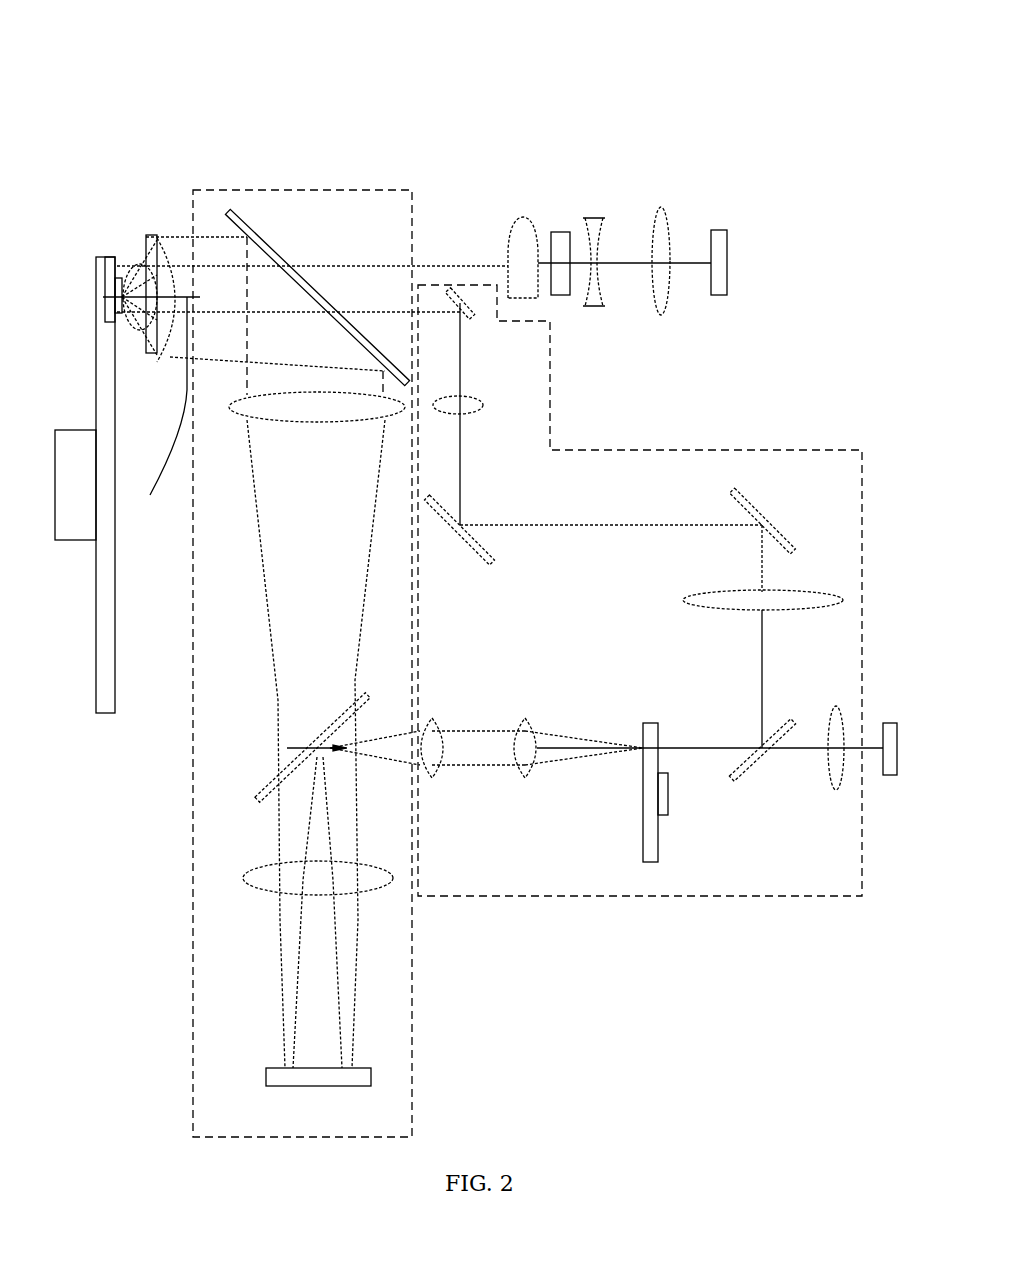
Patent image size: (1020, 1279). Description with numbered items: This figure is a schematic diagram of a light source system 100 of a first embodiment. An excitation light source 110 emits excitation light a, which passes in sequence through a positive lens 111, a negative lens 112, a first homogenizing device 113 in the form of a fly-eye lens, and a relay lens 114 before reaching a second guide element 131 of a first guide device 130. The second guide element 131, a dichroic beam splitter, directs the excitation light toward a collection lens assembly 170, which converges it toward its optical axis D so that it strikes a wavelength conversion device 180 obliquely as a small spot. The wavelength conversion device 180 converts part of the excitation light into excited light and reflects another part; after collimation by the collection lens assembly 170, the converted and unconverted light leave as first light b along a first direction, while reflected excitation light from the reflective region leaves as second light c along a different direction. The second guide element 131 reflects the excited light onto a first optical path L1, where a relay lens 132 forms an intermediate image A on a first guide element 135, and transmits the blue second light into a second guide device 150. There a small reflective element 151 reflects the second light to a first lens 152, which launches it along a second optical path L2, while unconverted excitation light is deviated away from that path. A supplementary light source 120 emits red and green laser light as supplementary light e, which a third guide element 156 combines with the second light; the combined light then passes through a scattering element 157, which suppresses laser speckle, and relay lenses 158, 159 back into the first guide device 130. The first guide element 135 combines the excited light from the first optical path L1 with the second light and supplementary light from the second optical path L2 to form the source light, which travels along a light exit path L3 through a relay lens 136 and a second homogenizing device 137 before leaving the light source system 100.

The light source system 100 is at (418, 74).
The excitation light source 110 is at (715, 235).
The positive lens 111 is at (672, 225).
The negative lens 112 is at (590, 300).
The first homogenizing device 113 is at (562, 240).
The relay lens 114 is at (520, 228).
The supplementary light source 120 is at (886, 725).
The first guide device 130 is at (285, 190).
The second guide element 131 is at (270, 250).
The relay lens 132 is at (305, 418).
The first guide element 135 is at (278, 782).
The relay lens 136 is at (257, 878).
The second homogenizing device 137 is at (266, 1080).
The second guide device 150 is at (735, 450).
The reflective element 151 is at (472, 310).
The first lens 152 is at (472, 405).
The third guide element 156 is at (745, 775).
The scattering element 157 is at (650, 735).
The relay lens 158 is at (525, 778).
The relay lens 159 is at (432, 718).
The collection lens assembly 170 is at (148, 233).
The wavelength conversion device 180 is at (103, 378).
The excitation light a is at (690, 262).
The first light b is at (181, 260).
The second light c is at (182, 315).
The optical axis D is at (146, 515).
The supplementary light e is at (868, 755).
The intermediate image A is at (273, 740).
The first optical path L1 is at (305, 600).
The second optical path L2 is at (570, 525).
The light exit path L3 is at (295, 818).